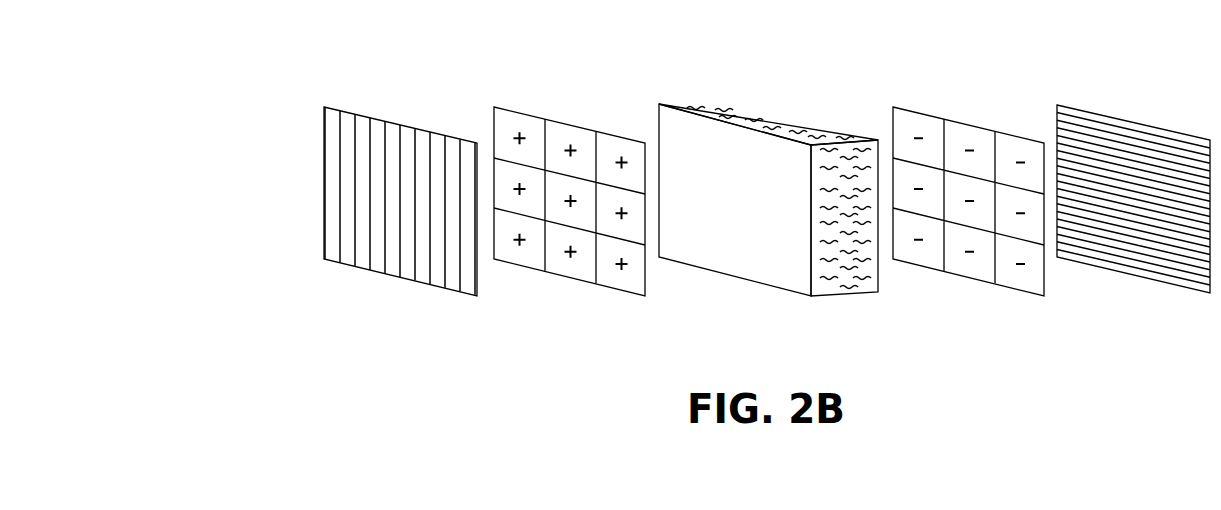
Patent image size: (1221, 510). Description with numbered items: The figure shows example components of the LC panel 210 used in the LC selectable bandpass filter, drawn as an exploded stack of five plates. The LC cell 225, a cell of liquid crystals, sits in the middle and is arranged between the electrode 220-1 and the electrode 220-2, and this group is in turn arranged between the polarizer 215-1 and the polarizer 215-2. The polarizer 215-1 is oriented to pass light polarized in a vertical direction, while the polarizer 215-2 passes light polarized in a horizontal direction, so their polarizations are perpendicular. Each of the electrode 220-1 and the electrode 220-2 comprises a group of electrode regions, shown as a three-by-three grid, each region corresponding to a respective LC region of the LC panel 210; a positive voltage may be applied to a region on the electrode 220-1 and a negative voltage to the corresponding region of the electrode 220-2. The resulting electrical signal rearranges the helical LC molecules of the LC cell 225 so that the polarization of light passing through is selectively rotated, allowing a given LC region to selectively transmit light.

The LC panel 210 is at (292, 52).
The polarizer 215-1 is at (400, 226).
The electrode 220-1 is at (569, 226).
The LC cell 225 is at (768, 225).
The electrode 220-2 is at (968, 226).
The polarizer 215-2 is at (1133, 225).